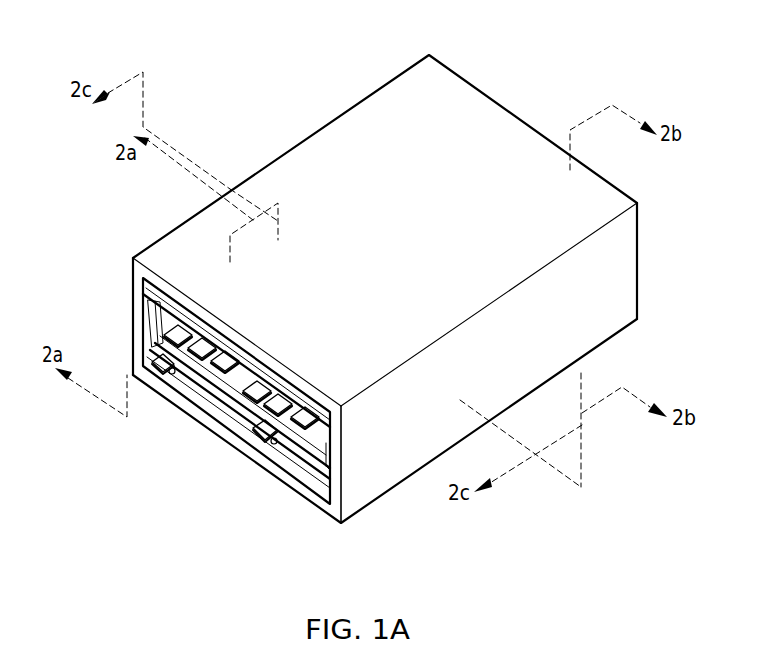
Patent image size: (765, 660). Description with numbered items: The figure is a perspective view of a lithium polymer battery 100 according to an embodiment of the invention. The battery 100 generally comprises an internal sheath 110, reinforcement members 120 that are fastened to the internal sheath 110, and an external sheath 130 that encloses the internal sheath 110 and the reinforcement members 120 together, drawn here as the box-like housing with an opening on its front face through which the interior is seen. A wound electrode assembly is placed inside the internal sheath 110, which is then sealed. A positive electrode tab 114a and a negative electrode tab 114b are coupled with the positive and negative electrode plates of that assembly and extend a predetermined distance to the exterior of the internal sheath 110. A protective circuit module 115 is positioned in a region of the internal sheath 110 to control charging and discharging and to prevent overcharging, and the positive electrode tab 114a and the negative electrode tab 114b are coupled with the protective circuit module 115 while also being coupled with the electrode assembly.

The lithium polymer battery 100 is at (280, 66).
The internal sheath 110 is at (136, 317).
The positive electrode tab 114a is at (262, 433).
The negative electrode tab 114b is at (158, 366).
The protective circuit module 115 is at (313, 437).
The reinforcement members 120 is at (320, 485).
The external sheath 130 is at (482, 125).